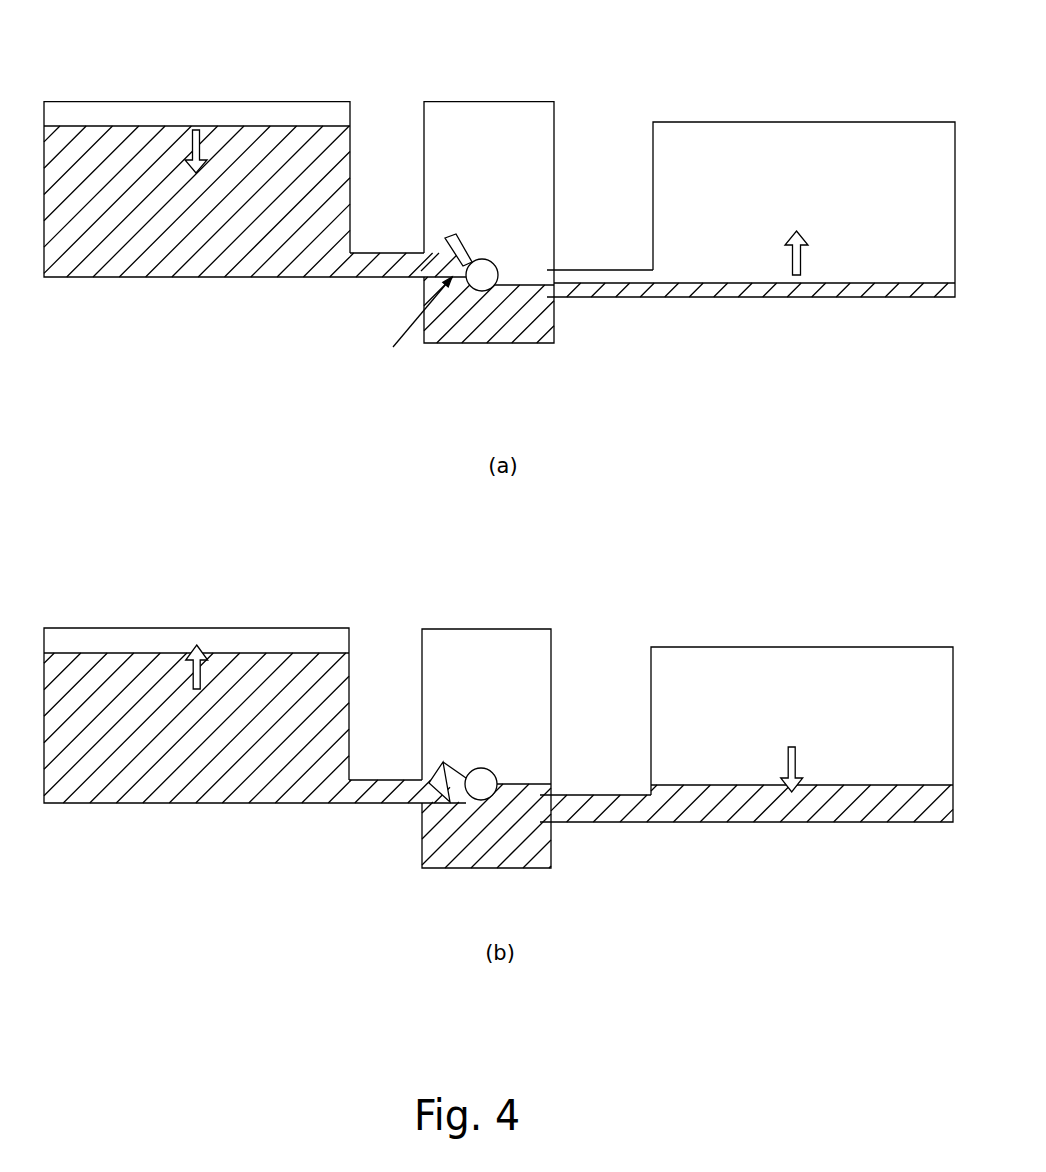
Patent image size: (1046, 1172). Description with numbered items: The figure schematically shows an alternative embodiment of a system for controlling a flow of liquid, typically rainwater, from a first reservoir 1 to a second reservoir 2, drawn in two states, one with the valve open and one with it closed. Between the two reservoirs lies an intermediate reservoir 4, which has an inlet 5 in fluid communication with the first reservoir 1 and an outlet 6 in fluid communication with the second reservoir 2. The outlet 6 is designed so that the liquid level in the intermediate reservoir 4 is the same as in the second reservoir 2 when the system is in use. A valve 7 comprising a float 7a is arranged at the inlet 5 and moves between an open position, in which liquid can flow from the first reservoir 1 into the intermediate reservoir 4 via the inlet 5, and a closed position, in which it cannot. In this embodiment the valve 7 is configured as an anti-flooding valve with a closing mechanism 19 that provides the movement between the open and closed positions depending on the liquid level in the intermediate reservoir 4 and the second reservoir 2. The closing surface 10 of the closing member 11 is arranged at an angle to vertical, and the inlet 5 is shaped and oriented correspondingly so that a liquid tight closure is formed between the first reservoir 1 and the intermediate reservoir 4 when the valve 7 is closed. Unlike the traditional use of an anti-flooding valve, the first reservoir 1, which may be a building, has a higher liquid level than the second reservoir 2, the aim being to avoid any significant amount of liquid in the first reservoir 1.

The first reservoir 1 is at (198, 101).
The second reservoir 2 is at (806, 121).
The intermediate reservoir 4 is at (488, 101).
The inlet 5 is at (442, 280).
The outlet 6 is at (553, 278).
The valve 7 is at (494, 304).
The float 7a is at (483, 277).
The closing surface 10 is at (408, 324).
The closing member 11 is at (443, 266).
The closing mechanism 19 is at (445, 251).